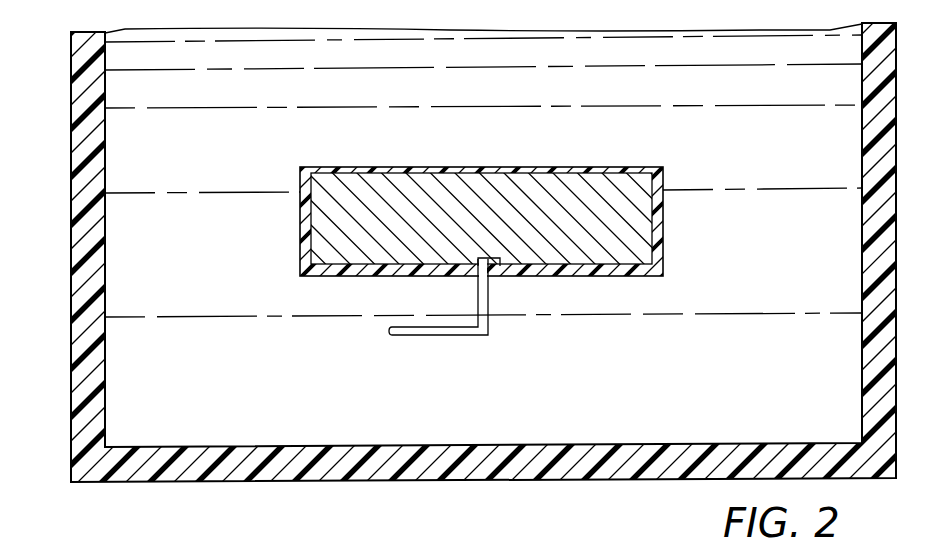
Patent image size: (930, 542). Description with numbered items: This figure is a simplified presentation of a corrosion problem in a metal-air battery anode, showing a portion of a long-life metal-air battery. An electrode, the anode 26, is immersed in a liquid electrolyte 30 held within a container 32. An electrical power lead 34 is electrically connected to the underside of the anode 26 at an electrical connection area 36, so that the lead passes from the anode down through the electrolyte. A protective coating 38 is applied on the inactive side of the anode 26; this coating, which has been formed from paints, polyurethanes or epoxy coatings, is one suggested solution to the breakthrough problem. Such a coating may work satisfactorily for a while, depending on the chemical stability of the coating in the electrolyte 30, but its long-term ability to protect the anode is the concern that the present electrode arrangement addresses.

The anode 26 is at (509, 200).
The liquid electrolyte 30 is at (248, 62).
The container 32 is at (69, 137).
The electrical power lead 34 is at (457, 337).
The electrical connection area 36 is at (493, 258).
The protective coating 38 is at (663, 229).